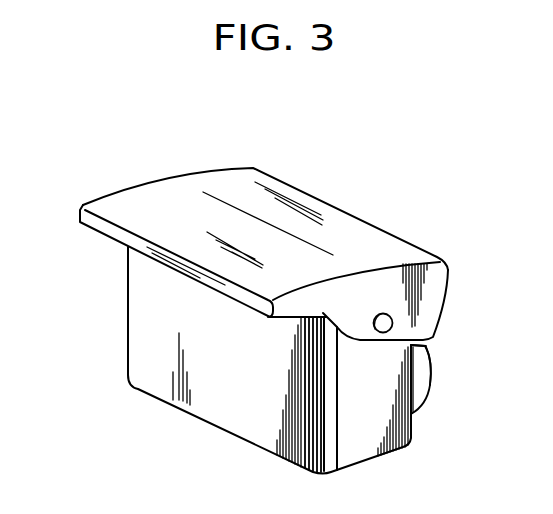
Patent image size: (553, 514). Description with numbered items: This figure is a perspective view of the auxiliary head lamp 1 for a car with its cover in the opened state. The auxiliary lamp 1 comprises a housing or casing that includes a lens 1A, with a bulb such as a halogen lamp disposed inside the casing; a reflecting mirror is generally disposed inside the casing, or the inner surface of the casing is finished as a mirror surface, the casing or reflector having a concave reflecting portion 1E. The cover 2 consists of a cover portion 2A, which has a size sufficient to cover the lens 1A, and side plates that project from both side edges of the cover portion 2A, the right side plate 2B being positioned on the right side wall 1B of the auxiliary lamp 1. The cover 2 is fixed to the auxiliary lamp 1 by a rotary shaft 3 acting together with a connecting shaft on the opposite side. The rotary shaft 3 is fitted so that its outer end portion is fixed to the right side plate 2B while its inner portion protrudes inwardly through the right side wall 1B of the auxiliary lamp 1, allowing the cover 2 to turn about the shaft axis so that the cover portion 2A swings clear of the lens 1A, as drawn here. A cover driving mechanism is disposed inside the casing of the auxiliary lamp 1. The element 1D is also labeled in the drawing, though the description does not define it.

The auxiliary head lamp 1 is at (417, 418).
The lens 1A is at (223, 388).
The right side wall 1B is at (383, 383).
The top edge of tab 1D is at (427, 351).
The concave reflecting portion 1E is at (417, 388).
The cover 2 is at (103, 193).
The cover portion 2A is at (300, 205).
The right side plate 2B is at (375, 280).
The rotary shaft 3 is at (390, 321).